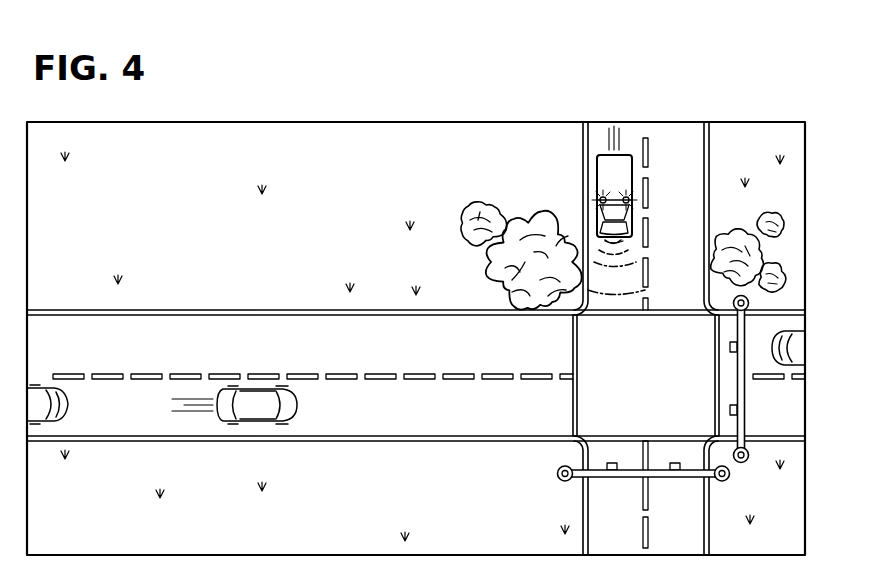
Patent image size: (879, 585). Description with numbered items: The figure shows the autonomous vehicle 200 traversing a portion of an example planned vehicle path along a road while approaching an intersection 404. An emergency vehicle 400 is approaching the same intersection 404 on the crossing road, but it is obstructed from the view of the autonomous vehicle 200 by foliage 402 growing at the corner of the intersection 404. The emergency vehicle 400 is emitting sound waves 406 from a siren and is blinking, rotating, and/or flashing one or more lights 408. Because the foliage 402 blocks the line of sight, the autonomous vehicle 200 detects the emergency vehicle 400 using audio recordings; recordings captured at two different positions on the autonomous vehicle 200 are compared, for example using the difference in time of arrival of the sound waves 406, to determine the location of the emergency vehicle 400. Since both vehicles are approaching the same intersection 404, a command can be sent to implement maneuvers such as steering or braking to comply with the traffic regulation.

The autonomous vehicle 200 is at (297, 405).
The emergency vehicle 400 is at (643, 190).
The foliage 402 is at (533, 217).
The intersection 404 is at (570, 450).
The sound waves 406 is at (612, 297).
The lights 408 is at (629, 202).